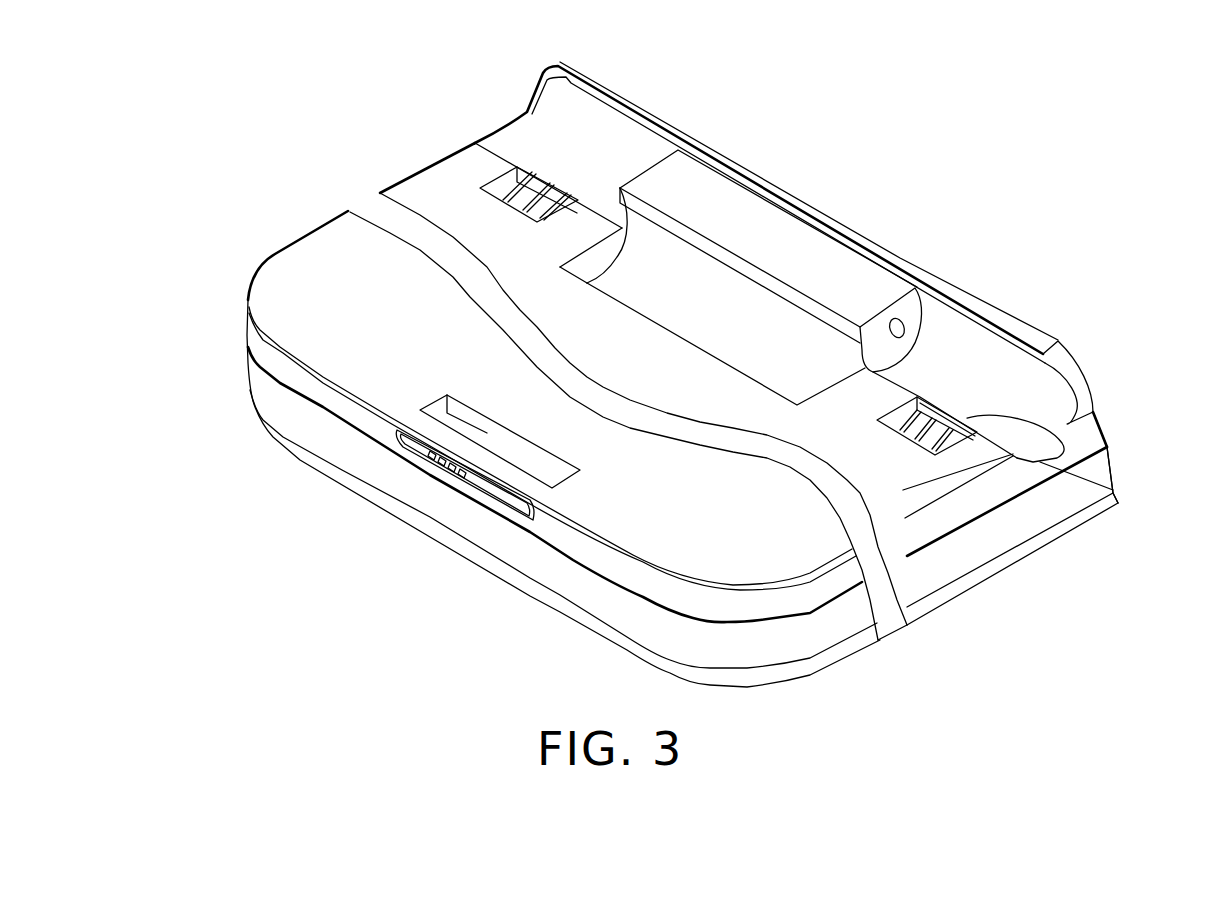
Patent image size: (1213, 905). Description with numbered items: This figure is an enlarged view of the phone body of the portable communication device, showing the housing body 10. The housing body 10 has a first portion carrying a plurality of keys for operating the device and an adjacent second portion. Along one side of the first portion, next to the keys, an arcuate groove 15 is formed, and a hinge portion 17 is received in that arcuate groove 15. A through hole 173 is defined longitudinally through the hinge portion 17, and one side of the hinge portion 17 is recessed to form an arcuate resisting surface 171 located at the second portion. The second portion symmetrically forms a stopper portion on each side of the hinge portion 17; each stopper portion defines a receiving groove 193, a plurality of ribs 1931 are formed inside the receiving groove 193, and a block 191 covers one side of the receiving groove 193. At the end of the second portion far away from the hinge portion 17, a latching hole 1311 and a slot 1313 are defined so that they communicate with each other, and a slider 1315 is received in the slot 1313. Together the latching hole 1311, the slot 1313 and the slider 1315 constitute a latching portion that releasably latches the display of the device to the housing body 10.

The housing body 10 is at (318, 97).
The arcuate groove 15 is at (560, 93).
The hinge portion 17 is at (748, 236).
The arcuate resisting surface 171 is at (833, 352).
The through hole 173 is at (905, 328).
The latching hole 1311 is at (445, 418).
The slot 1313 is at (503, 490).
The slider 1315 is at (437, 456).
The block 191 is at (1107, 453).
The receiving groove 193 is at (953, 435).
The ribs 1931 is at (938, 450).